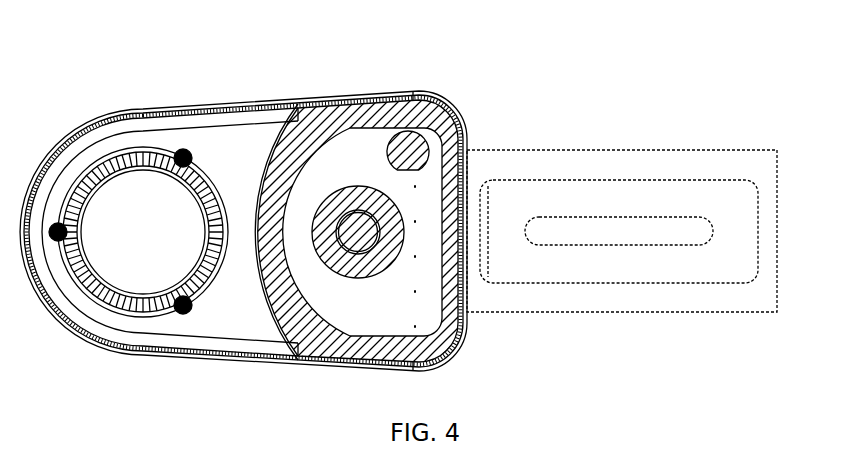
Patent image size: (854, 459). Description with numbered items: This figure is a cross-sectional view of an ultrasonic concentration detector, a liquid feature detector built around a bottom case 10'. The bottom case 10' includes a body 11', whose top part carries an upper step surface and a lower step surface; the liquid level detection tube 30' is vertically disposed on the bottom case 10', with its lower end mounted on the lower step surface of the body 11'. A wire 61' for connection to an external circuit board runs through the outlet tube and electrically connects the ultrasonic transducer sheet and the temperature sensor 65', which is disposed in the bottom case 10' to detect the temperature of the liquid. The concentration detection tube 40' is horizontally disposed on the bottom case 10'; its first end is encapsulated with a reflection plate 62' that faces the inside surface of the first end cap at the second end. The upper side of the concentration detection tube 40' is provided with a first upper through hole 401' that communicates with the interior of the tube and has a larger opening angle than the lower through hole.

The bottom case 10' is at (360, 226).
The body 11' is at (221, 221).
The liquid level detection tube 30' is at (138, 206).
The concentration detection tube 40' is at (619, 205).
The first upper through hole 401' is at (619, 183).
The wire 61' is at (360, 243).
The reflection plate 62' is at (645, 231).
The temperature sensor 65' is at (360, 223).